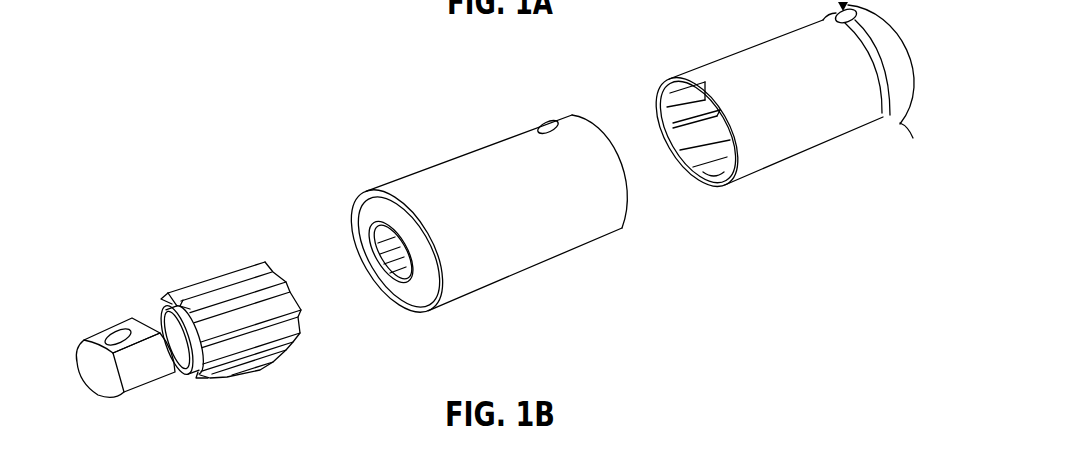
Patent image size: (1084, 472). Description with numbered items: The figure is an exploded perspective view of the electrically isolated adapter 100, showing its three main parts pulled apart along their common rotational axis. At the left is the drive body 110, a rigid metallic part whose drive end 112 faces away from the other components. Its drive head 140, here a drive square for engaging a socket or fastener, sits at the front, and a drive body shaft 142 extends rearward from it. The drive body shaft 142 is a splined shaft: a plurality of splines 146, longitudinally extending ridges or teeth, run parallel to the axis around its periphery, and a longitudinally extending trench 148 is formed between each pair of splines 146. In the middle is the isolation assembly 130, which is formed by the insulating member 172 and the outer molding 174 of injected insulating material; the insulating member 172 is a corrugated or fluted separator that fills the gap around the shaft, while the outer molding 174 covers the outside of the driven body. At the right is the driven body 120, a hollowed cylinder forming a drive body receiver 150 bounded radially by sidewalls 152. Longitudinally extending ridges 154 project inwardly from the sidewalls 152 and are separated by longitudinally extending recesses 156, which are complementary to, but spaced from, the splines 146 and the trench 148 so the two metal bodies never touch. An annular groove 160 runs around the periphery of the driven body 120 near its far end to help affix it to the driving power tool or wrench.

The electrically isolated adapter 100 is at (165, 172).
The drive body 110 is at (122, 303).
The drive end 112 is at (194, 372).
The drive head 140 is at (104, 375).
The drive body shaft 142 is at (313, 340).
The splines 146 is at (228, 283).
The trench 148 is at (261, 255).
The isolation assembly 130 is at (538, 282).
The insulating member 172 is at (403, 282).
The outer molding 174 is at (475, 168).
The driven body 120 is at (824, 182).
The drive body receiver 150 is at (662, 135).
The sidewalls 152 is at (757, 60).
The ridges 154 is at (710, 177).
The recesses 156 is at (690, 113).
The annular groove 160 is at (890, 99).